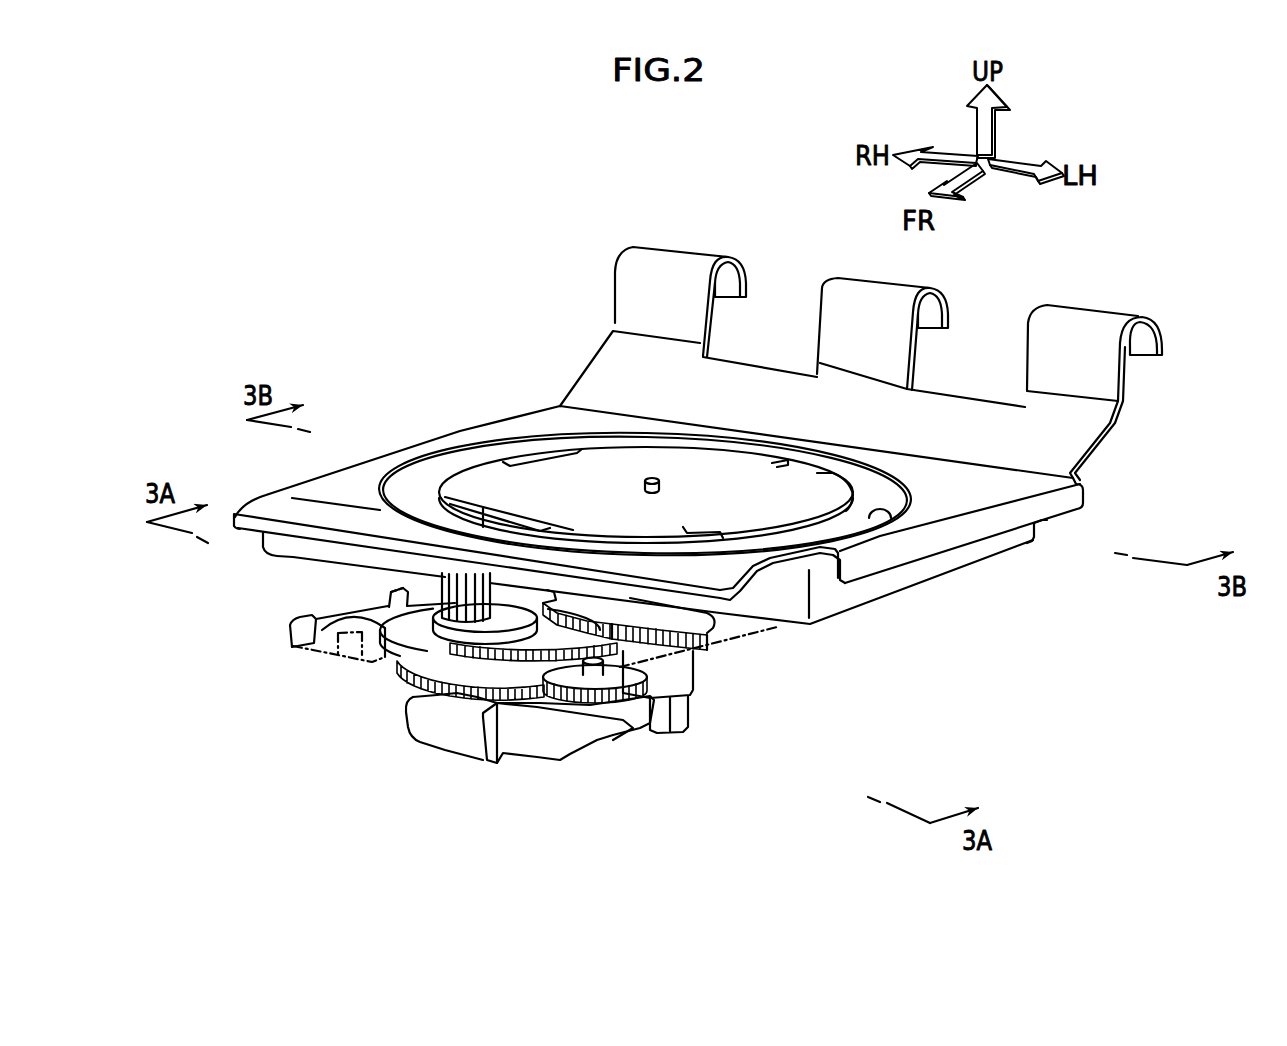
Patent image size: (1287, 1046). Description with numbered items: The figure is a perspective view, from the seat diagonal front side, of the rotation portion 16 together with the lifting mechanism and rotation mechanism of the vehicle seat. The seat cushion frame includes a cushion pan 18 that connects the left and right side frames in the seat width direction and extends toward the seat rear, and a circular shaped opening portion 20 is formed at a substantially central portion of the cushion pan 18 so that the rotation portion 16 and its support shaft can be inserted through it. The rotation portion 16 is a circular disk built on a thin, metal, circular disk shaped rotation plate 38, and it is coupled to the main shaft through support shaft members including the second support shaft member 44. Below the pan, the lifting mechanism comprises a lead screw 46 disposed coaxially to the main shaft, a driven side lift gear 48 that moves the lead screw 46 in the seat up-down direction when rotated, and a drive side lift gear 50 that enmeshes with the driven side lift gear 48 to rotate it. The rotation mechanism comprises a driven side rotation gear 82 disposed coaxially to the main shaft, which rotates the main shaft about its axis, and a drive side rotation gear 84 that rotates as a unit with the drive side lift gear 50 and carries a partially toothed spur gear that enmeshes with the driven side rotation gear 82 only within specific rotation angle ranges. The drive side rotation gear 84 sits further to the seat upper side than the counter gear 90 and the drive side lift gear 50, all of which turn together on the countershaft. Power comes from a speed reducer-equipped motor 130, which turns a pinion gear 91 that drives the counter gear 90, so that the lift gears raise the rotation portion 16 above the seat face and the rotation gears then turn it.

The rotation portion 16 is at (618, 419).
The cushion pan 18 is at (964, 484).
The opening portion 20 is at (893, 522).
The rotation plate 38 is at (475, 485).
The second support shaft member 44 is at (710, 634).
The lead screw 46 is at (686, 731).
The driven side lift gear 48 is at (697, 672).
The drive side lift gear 50 is at (290, 626).
The driven side rotation gear 82 is at (703, 647).
The drive side rotation gear 84 is at (443, 580).
The counter gear 90 is at (413, 681).
The pinion gear 91 is at (637, 700).
The speed reducer-equipped motor 130 is at (528, 755).